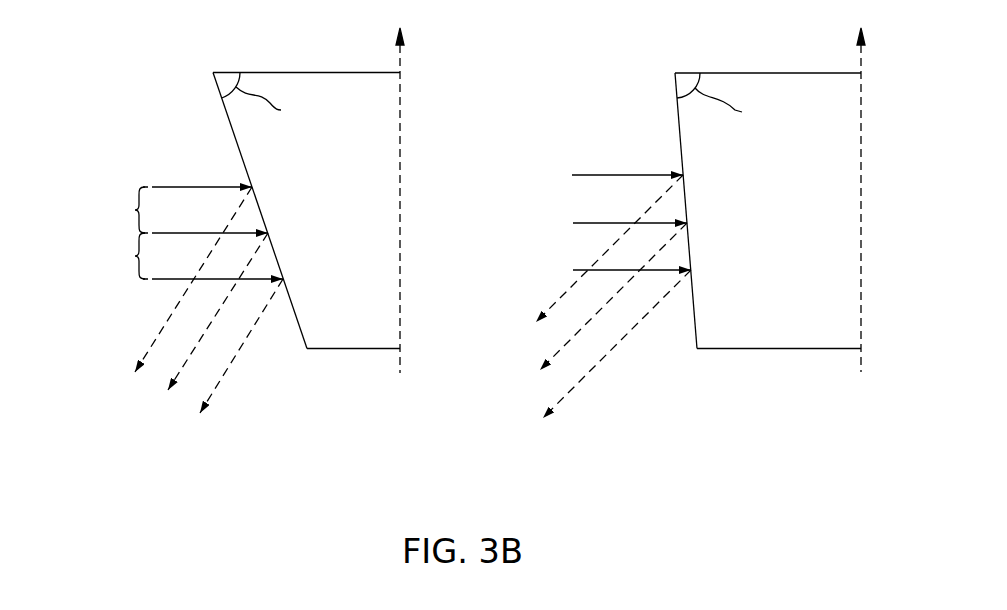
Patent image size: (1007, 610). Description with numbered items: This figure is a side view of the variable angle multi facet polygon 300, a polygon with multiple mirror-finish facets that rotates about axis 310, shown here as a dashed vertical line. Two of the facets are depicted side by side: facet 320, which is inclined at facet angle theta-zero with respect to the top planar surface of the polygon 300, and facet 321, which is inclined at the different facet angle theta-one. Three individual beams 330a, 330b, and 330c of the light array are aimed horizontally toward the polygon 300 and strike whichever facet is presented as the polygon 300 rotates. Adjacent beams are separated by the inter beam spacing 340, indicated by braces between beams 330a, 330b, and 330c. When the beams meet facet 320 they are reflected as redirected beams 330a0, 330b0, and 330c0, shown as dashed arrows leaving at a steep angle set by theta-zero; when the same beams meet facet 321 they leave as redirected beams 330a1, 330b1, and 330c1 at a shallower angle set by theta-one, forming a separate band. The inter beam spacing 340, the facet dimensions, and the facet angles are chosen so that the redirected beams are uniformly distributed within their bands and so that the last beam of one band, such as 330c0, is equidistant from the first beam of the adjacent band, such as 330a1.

The variable angle multi facet polygon 300 is at (375, 349).
The axis 310 is at (400, 73).
The facet 320 is at (300, 340).
The facet 321 is at (695, 340).
The individual beam 330a is at (172, 187).
The individual beam 330b is at (212, 233).
The individual beam 330c is at (140, 280).
The redirected beam 330a0 is at (160, 332).
The redirected beam 330b0 is at (183, 365).
The redirected beam 330c0 is at (214, 390).
The redirected beam 330a1 is at (565, 296).
The redirected beam 330b1 is at (573, 340).
The redirected beam 330c1 is at (577, 388).
The inter beam spacing 340 is at (135, 210).